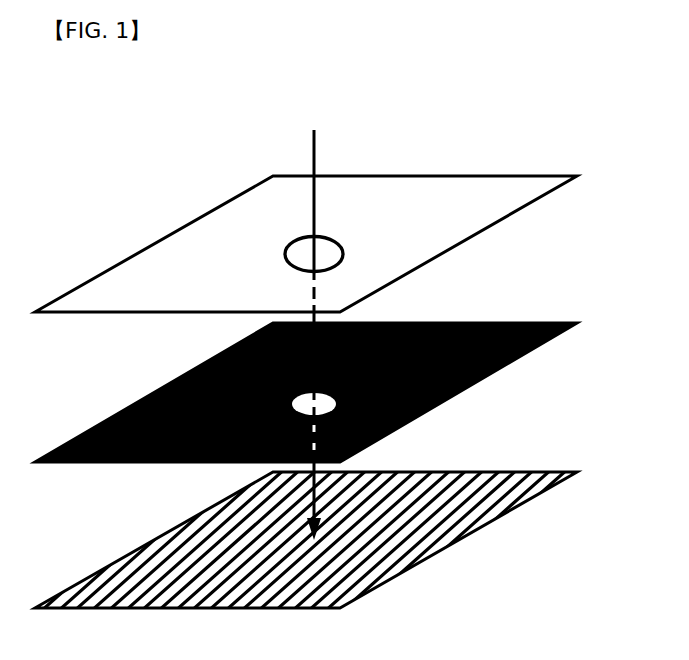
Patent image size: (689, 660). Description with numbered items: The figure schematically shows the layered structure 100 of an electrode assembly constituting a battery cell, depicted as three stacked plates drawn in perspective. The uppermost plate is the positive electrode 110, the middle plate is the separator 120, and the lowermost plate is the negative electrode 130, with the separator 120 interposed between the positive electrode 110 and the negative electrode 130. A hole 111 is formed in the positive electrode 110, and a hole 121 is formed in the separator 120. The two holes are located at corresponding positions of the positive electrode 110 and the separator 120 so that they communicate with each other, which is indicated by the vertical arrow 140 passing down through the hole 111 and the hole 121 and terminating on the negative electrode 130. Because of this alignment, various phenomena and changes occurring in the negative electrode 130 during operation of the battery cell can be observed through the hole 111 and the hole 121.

The optical element 100 is at (112, 144).
The positive electrode 110 is at (143, 280).
The hole 111 is at (326, 238).
The separator 120 is at (142, 427).
The hole 121 is at (323, 393).
The negative electrode 130 is at (143, 575).
The communication of the holes 140 is at (314, 323).